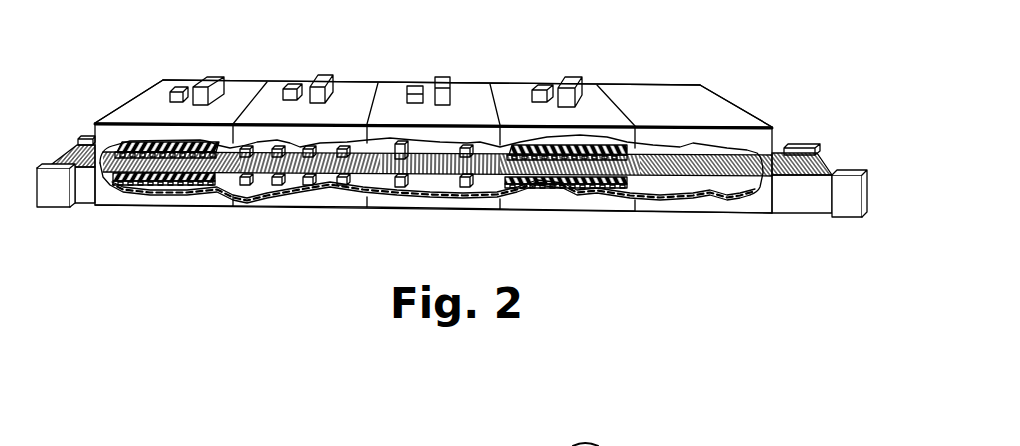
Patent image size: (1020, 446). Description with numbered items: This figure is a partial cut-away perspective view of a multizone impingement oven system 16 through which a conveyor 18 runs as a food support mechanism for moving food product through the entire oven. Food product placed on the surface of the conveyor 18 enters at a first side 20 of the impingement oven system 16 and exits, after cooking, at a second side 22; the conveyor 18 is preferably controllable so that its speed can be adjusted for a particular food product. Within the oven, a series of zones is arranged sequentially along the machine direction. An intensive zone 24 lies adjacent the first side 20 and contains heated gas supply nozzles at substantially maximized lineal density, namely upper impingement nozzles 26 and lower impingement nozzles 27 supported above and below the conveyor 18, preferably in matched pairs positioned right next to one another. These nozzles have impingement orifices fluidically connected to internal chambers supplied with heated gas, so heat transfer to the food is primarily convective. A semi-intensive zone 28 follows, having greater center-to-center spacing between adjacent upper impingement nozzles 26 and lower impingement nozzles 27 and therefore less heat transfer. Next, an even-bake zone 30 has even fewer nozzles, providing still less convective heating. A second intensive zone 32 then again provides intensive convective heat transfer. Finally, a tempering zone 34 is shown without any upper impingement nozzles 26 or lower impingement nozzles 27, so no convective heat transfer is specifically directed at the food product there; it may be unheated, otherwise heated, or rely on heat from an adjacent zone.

The impingement oven system 16 is at (349, 53).
The conveyor 18 is at (227, 200).
The first side 20 is at (132, 97).
The second side 22 is at (742, 107).
The intensive zone 24 is at (127, 204).
The upper impingement nozzles 26 is at (174, 143).
The lower impingement nozzles 27 is at (195, 185).
The semi-intensive zone 28 is at (263, 203).
The even-bake zone 30 is at (427, 206).
The second intensive zone 32 is at (522, 204).
The tempering zone 34 is at (670, 93).